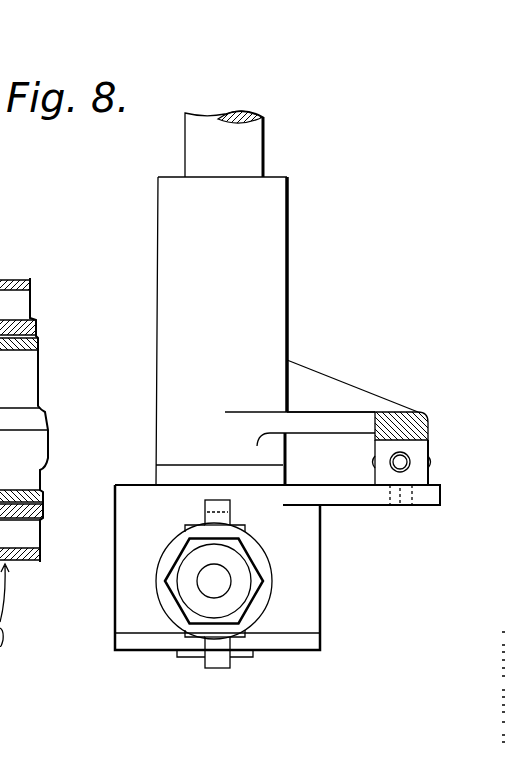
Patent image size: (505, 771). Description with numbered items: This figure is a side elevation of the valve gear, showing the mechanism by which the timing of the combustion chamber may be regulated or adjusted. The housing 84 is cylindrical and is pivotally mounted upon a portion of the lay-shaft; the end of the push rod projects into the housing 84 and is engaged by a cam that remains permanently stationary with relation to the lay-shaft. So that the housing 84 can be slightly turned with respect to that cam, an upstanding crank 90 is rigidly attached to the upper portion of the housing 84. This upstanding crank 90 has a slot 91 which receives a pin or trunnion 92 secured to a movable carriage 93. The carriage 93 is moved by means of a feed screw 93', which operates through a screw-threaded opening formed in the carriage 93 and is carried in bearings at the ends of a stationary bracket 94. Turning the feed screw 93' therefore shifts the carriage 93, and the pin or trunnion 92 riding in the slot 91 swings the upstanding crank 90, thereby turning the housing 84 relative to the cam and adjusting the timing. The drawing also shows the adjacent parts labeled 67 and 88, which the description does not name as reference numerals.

The rod 67 is at (250, 143).
The body / sleeve 88 is at (268, 240).
The upstanding crank 90 is at (335, 486).
The stationary bracket 94 is at (432, 411).
The movable carriage 93 is at (439, 462).
The feed screw 93' is at (447, 442).
The slot 91 is at (418, 494).
The pin or trunnion 92 is at (400, 505).
The housing 84 is at (305, 602).